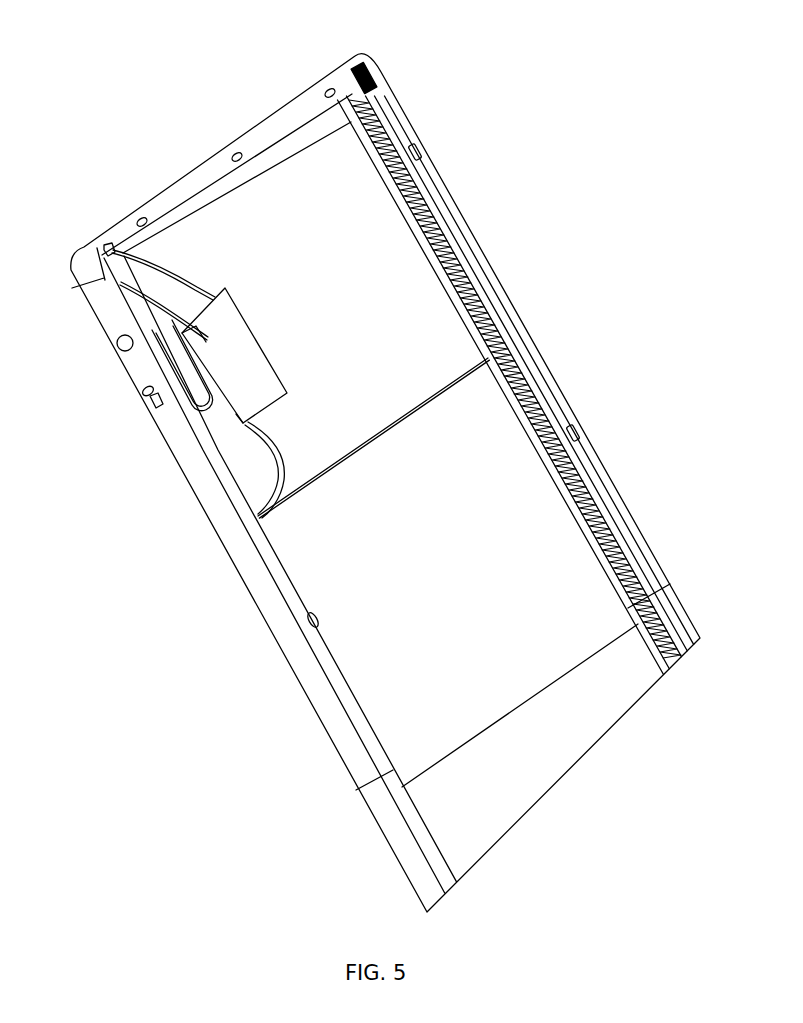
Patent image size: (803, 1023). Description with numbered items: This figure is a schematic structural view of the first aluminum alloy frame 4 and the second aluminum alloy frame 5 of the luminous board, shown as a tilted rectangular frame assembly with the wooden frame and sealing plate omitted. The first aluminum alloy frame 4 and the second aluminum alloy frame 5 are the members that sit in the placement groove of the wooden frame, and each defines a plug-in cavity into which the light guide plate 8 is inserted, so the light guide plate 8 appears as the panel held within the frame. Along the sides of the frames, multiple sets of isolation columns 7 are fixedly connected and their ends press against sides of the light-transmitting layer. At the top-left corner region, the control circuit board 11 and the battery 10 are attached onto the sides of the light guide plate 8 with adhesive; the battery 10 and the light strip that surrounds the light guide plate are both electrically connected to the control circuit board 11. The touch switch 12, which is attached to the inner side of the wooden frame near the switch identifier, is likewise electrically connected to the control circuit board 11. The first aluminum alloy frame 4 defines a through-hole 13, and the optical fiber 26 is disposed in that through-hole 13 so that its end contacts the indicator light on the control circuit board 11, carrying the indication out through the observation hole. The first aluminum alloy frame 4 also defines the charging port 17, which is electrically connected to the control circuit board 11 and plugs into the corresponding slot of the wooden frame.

The first aluminum alloy frame 4 is at (303, 695).
The second aluminum alloy frame 5 is at (390, 852).
The isolation columns 7 is at (580, 432).
The light guide plate 8 is at (378, 68).
The battery 10 is at (572, 550).
The control circuit board 11 is at (222, 306).
The touch switch 12 is at (123, 345).
The through-hole 13 is at (157, 405).
The charging port 17 is at (121, 216).
The optical fiber 26 is at (140, 397).